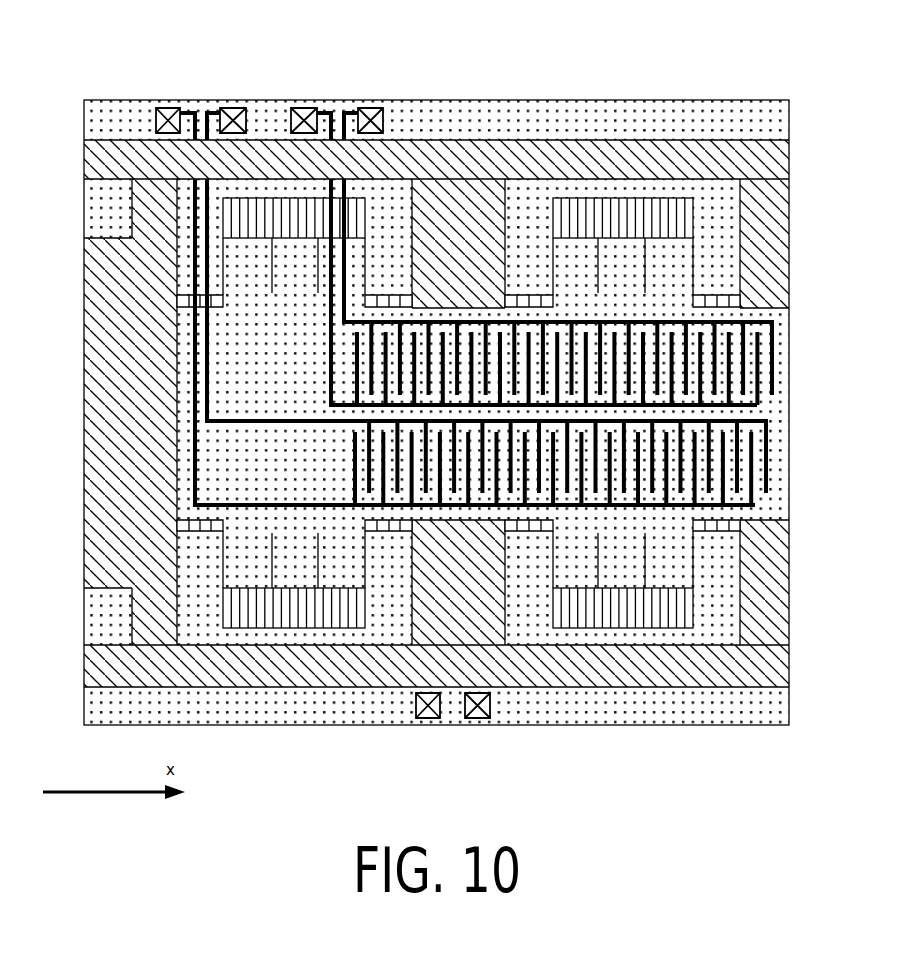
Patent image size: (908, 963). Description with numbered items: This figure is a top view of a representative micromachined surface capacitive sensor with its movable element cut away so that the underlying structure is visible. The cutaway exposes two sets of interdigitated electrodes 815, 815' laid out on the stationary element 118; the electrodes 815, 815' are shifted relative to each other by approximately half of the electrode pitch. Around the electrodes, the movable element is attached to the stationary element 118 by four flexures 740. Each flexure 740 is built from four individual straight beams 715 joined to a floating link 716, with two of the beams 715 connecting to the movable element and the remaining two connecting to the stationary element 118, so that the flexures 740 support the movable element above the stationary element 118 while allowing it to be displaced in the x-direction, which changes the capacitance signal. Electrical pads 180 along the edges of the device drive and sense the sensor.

The stationary element 118 is at (773, 507).
The electrical pads 180 is at (308, 113).
The individual straight beams 715 is at (595, 573).
The floating link 716 is at (653, 615).
The flexures 740 is at (718, 232).
The electrodes 815 is at (595, 259).
The electrodes 815' is at (531, 309).